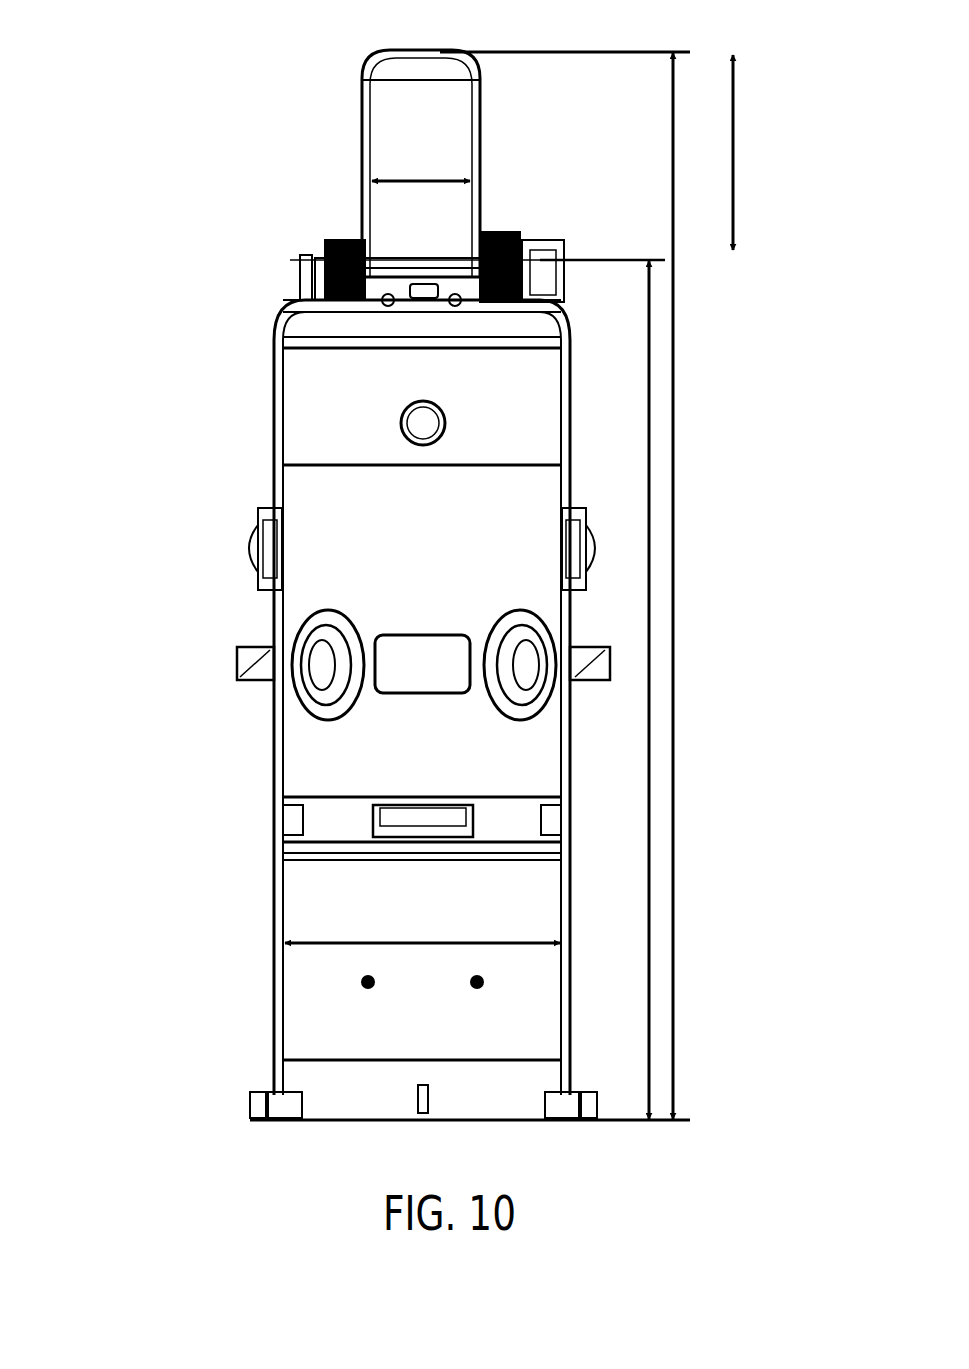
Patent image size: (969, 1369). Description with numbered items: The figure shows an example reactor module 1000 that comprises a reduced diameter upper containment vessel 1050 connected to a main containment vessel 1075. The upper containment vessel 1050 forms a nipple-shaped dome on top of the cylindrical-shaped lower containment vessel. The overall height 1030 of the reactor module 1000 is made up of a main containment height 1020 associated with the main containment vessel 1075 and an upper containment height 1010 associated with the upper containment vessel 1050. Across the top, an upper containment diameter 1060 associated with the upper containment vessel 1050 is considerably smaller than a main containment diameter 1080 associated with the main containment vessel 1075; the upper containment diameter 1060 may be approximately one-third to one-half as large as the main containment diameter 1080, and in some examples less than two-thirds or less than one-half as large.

The reactor module 1000 is at (188, 465).
The upper containment height 1010 is at (735, 142).
The main containment height 1020 is at (652, 840).
The overall height 1030 is at (676, 515).
The upper containment vessel 1050 is at (362, 140).
The upper containment diameter 1060 is at (418, 180).
The main containment vessel 1075 is at (275, 870).
The main containment diameter 1080 is at (418, 942).